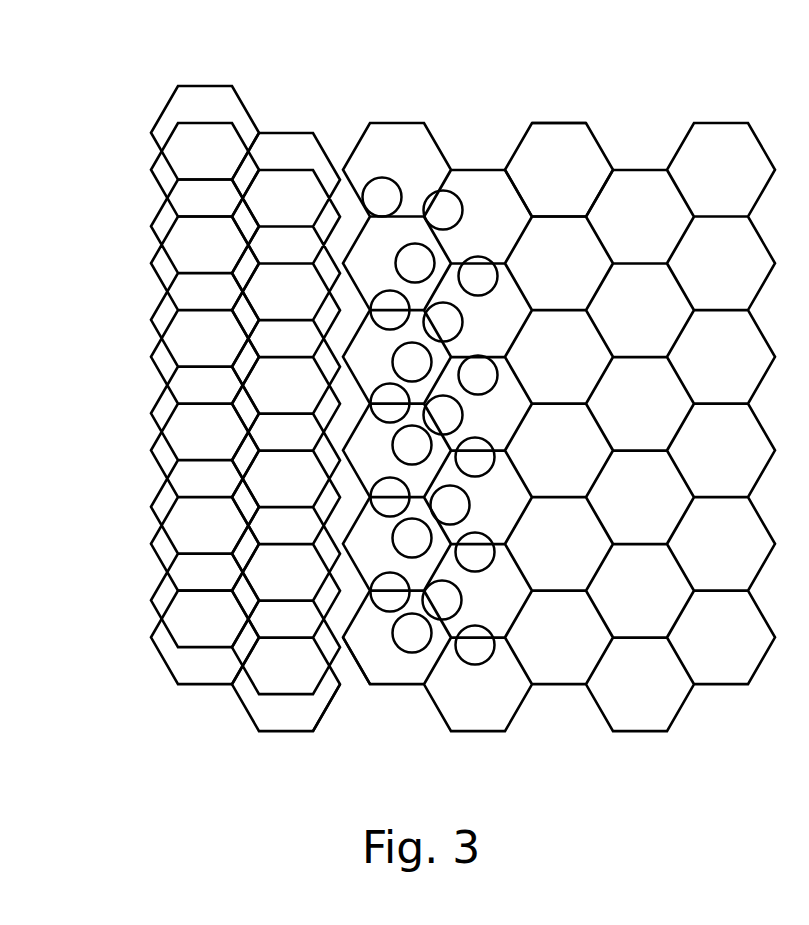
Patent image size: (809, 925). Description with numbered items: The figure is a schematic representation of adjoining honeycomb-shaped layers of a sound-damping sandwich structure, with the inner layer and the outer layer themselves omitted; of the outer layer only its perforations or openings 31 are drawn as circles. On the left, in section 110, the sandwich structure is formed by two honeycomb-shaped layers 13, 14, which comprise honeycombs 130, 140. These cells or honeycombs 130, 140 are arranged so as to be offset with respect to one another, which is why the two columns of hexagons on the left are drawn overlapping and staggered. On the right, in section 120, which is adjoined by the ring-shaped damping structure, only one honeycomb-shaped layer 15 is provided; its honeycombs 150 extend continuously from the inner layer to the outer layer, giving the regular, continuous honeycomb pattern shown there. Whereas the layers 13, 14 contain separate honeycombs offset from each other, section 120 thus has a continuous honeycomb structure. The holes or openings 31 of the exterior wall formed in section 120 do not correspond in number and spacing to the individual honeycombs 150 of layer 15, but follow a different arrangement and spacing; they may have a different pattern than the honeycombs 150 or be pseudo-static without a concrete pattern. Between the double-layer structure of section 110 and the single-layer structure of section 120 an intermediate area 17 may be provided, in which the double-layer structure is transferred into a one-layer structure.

The layer 13 is at (165, 108).
The layer 14 is at (158, 182).
The layer 15 is at (557, 122).
The intermediate area 17 is at (352, 718).
The openings 31 is at (457, 192).
The section 110 is at (275, 92).
The section 120 is at (559, 375).
The honeycombs 130 is at (153, 387).
The honeycombs 140 is at (200, 670).
The honeycombs 150 is at (588, 150).